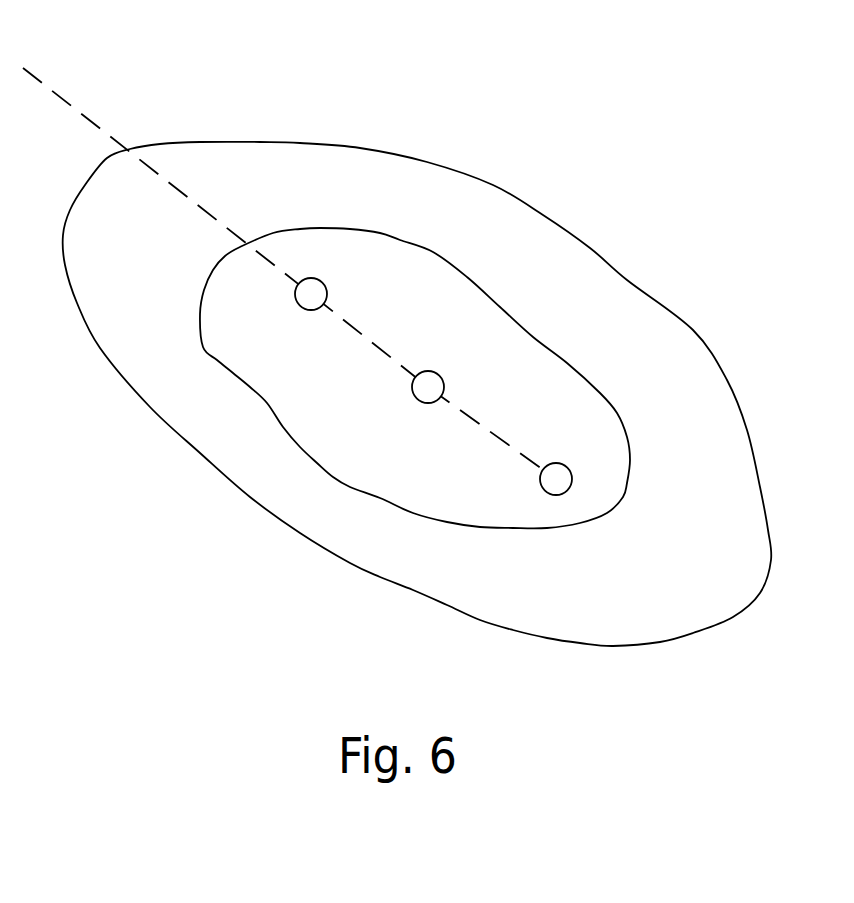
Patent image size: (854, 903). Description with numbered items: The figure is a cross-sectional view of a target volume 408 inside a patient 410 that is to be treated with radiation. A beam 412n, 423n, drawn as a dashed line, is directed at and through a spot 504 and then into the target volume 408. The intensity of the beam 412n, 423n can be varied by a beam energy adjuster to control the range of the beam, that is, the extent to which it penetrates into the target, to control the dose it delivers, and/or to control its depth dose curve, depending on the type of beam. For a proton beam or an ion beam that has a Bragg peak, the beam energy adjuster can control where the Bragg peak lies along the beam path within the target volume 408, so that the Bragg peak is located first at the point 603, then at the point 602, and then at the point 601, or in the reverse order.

The target volume 408 is at (350, 402).
The patient 410 is at (665, 596).
The beam 412n is at (289, 246).
The beam 423n is at (75, 108).
The spot 504 is at (284, 158).
The point 601 is at (373, 304).
The point 602 is at (489, 394).
The point 603 is at (532, 492).